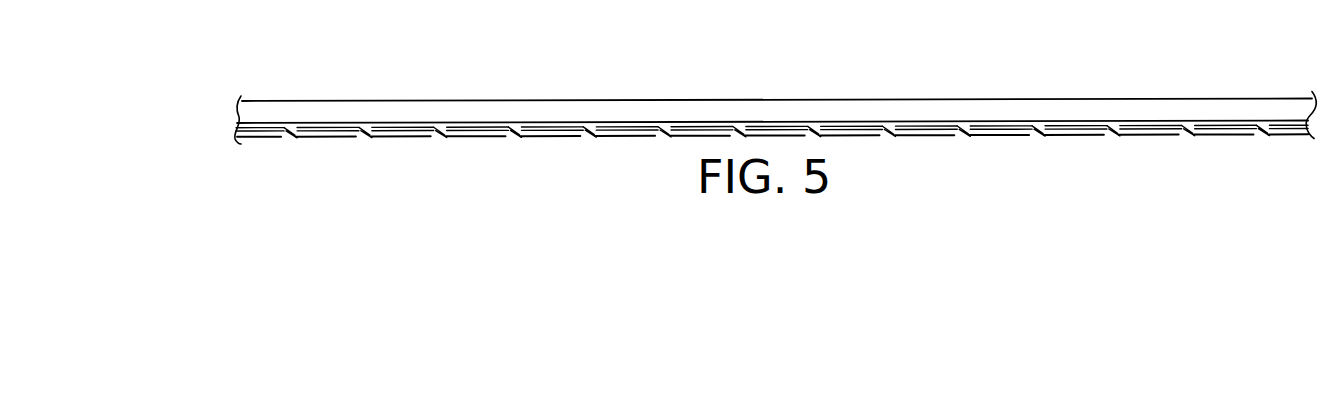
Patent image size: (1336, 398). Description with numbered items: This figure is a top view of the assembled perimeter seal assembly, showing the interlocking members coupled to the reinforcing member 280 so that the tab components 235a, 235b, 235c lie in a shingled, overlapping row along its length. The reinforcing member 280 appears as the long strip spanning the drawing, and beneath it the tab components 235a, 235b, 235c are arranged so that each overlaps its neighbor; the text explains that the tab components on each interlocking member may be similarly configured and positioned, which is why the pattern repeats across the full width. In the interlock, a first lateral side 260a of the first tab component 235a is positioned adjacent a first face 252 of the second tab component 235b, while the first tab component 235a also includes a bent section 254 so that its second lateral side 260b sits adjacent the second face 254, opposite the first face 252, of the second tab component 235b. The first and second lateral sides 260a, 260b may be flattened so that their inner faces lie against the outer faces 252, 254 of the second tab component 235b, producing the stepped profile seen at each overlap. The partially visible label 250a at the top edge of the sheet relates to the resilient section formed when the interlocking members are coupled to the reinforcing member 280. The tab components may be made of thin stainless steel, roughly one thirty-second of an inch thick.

The reinforcing member 280 is at (290, 110).
The first tab component 235a is at (507, 130).
The second tab component 235b is at (462, 140).
The plate 235c is at (620, 140).
The first face 252 is at (448, 128).
The bent section 254 is at (513, 128).
The first lateral side 260a is at (476, 128).
The second lateral side 260b is at (566, 130).
The assembly 250a is at (402, 63).